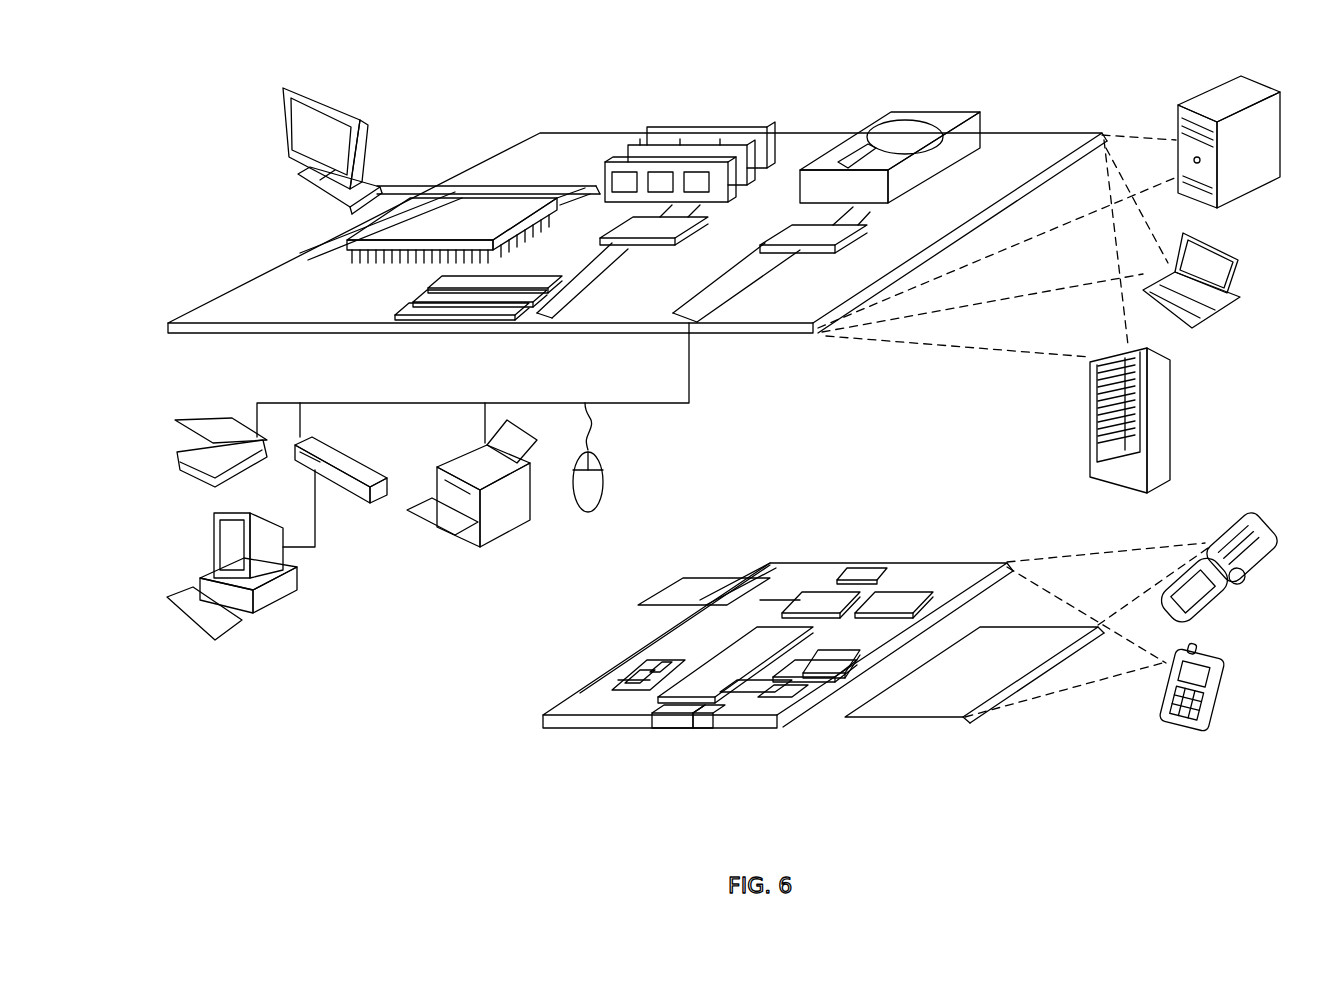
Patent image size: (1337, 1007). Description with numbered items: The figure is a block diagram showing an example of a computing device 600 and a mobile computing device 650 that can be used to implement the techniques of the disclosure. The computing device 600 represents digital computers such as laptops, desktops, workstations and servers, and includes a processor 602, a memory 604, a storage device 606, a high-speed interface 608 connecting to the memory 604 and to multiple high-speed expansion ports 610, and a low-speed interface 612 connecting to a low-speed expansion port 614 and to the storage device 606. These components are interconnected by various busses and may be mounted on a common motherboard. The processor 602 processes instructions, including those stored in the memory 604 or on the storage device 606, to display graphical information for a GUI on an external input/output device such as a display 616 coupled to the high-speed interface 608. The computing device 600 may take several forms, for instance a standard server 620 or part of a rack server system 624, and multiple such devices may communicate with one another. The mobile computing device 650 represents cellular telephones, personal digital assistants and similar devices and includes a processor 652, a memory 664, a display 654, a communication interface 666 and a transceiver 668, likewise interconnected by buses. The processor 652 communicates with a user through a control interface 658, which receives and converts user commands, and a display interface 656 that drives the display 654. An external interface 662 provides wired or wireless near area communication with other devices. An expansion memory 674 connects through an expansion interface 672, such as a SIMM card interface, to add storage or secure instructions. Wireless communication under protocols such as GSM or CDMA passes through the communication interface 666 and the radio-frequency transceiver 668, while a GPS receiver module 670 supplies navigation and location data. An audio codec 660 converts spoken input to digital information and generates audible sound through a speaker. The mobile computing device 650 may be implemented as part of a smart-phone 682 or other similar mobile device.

The computing device 600 is at (467, 100).
The processor 602 is at (347, 240).
The memory 604 is at (662, 125).
The storage device 606 is at (875, 116).
The high-speed interface 608 is at (574, 185).
The high-speed expansion ports 610 is at (417, 295).
The low-speed interface 612 is at (792, 220).
The low-speed expansion port 614 is at (697, 325).
The display 616 is at (276, 84).
The standard server 620 is at (1178, 115).
The rack server system 624 is at (1090, 432).
The mobile computing device 650 is at (516, 732).
The processor 652 is at (711, 728).
The display 654 is at (944, 725).
The display interface 656 is at (778, 700).
The control interface 658 is at (820, 687).
The audio codec 660 is at (1216, 528).
The external interface 662 is at (680, 728).
The memory 664 is at (630, 674).
The communication interface 666 is at (818, 600).
The transceiver 668 is at (895, 601).
The GPS receiver module 670 is at (863, 568).
The expansion interface 672 is at (760, 573).
The expansion memory 674 is at (680, 577).
The smart-phone 682 is at (1166, 698).